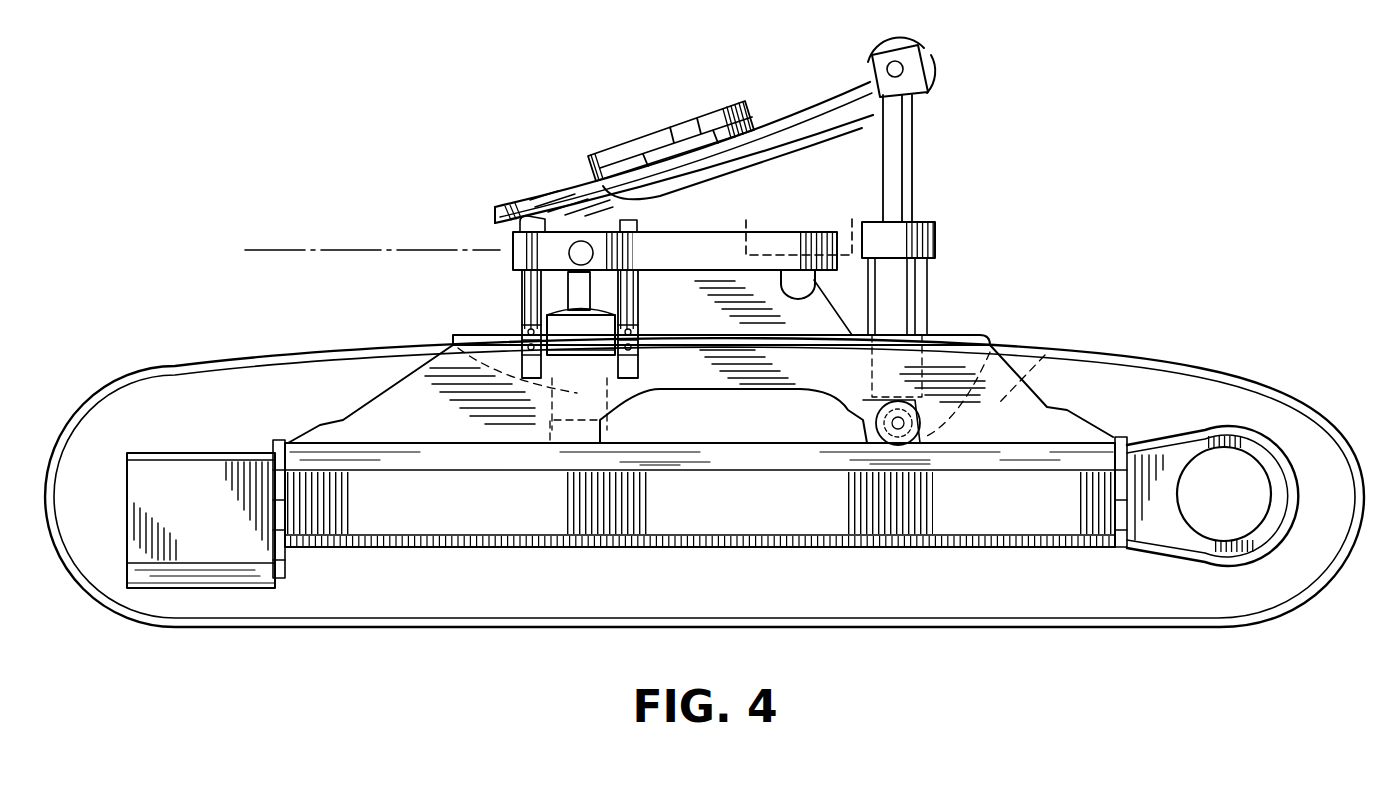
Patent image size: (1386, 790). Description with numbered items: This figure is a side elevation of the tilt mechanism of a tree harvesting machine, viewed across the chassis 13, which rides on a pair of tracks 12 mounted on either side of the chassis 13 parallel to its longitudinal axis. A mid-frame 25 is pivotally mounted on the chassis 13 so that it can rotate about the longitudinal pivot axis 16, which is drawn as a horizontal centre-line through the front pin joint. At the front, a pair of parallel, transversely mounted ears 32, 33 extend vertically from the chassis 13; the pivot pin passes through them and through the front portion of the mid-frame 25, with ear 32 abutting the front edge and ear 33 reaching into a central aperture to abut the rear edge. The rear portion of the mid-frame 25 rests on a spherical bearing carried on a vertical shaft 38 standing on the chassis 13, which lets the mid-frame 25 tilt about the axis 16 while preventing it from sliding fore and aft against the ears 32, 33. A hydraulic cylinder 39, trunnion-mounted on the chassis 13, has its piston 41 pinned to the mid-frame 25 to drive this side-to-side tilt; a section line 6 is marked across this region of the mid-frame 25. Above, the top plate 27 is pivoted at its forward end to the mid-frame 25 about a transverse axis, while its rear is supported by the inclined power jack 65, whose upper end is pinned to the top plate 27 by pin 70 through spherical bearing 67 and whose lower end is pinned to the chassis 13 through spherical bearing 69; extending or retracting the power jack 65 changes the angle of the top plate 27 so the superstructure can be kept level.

The tracks 12 is at (1185, 358).
The chassis 13 is at (945, 342).
The longitudinal pivot axis 16 is at (280, 250).
The mid-frame 25 is at (650, 232).
The top plate 27 is at (812, 95).
The ear 32 is at (520, 284).
The ear 33 is at (640, 308).
The vertical shaft 38 is at (810, 283).
The hydraulic cylinder 39 is at (445, 345).
The piston 41 is at (575, 296).
The power jack 65 is at (935, 238).
The spherical bearing 67 is at (922, 60).
The spherical bearing 69 is at (1050, 356).
The pin 70 is at (898, 69).
The section line 6- 6 is at (797, 219).